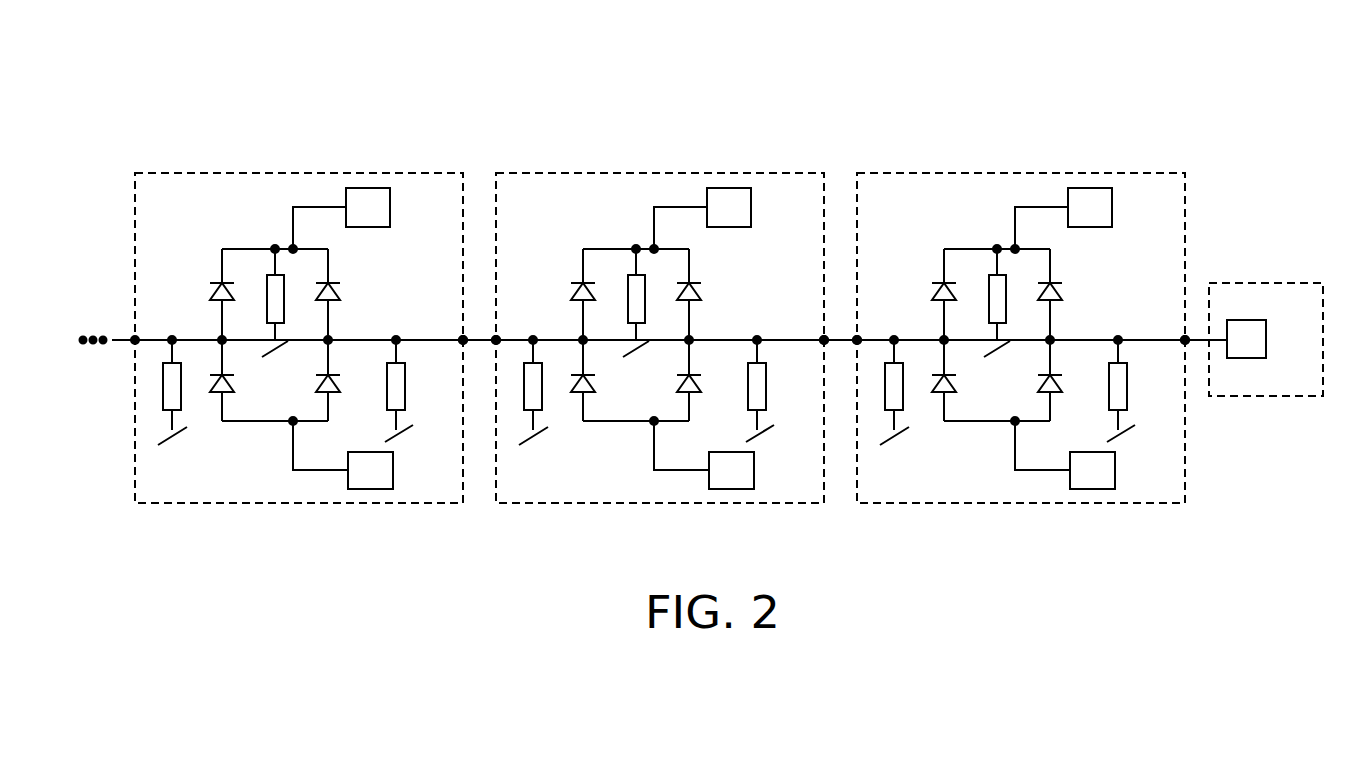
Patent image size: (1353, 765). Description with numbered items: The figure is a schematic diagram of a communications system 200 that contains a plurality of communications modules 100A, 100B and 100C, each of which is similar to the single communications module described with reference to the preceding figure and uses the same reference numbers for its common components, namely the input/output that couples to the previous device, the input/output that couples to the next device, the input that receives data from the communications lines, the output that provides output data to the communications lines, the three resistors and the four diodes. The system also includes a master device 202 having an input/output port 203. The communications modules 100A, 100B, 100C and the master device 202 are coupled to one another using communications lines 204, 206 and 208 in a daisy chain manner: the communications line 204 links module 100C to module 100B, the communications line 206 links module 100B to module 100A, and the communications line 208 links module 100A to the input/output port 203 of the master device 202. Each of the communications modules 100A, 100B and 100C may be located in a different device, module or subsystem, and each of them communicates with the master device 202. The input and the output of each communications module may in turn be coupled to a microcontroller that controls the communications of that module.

The communications system 200 is at (637, 88).
The communications module 100C is at (203, 172).
The communications module 100B is at (660, 331).
The communications module 100A is at (1021, 331).
The communications line 204 is at (480, 340).
The communications line 206 is at (843, 340).
The communications line 208 is at (1194, 340).
The input/output port 203 is at (1208, 341).
The master device 202 is at (1252, 397).